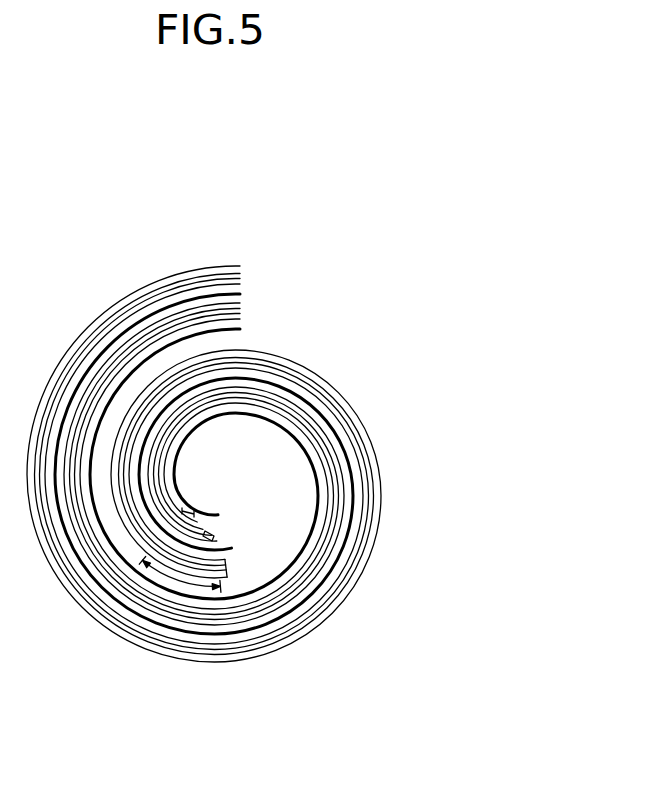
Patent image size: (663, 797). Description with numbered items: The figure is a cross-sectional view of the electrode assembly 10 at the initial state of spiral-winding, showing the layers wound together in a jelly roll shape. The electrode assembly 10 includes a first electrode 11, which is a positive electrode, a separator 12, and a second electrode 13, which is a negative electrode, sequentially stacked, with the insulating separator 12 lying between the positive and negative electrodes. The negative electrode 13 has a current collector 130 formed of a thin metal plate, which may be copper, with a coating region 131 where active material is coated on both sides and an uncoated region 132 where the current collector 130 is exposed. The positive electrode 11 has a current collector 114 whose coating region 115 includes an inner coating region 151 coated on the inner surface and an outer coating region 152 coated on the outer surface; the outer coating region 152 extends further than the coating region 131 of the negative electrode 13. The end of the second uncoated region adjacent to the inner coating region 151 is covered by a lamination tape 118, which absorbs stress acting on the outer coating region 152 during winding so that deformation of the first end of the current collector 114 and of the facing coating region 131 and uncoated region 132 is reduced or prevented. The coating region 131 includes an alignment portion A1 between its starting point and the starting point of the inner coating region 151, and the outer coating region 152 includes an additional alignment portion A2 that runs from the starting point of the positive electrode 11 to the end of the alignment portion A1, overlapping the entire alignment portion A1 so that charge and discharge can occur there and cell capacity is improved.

The electrode assembly 10 is at (247, 201).
The first electrode 11 is at (285, 541).
The current collector 114 is at (333, 595).
The coating region 115 is at (290, 464).
The inner coating region 151 is at (350, 557).
The outer coating region 152 is at (372, 530).
The lamination tape 118 is at (297, 613).
The separator 12 is at (227, 632).
The second electrode 13 is at (277, 464).
The current collector 130 is at (310, 437).
The coating region 131 is at (315, 424).
The uncoated region 132 is at (210, 533).
The alignment portion A1 is at (210, 499).
The additional alignment portion A2 is at (177, 582).